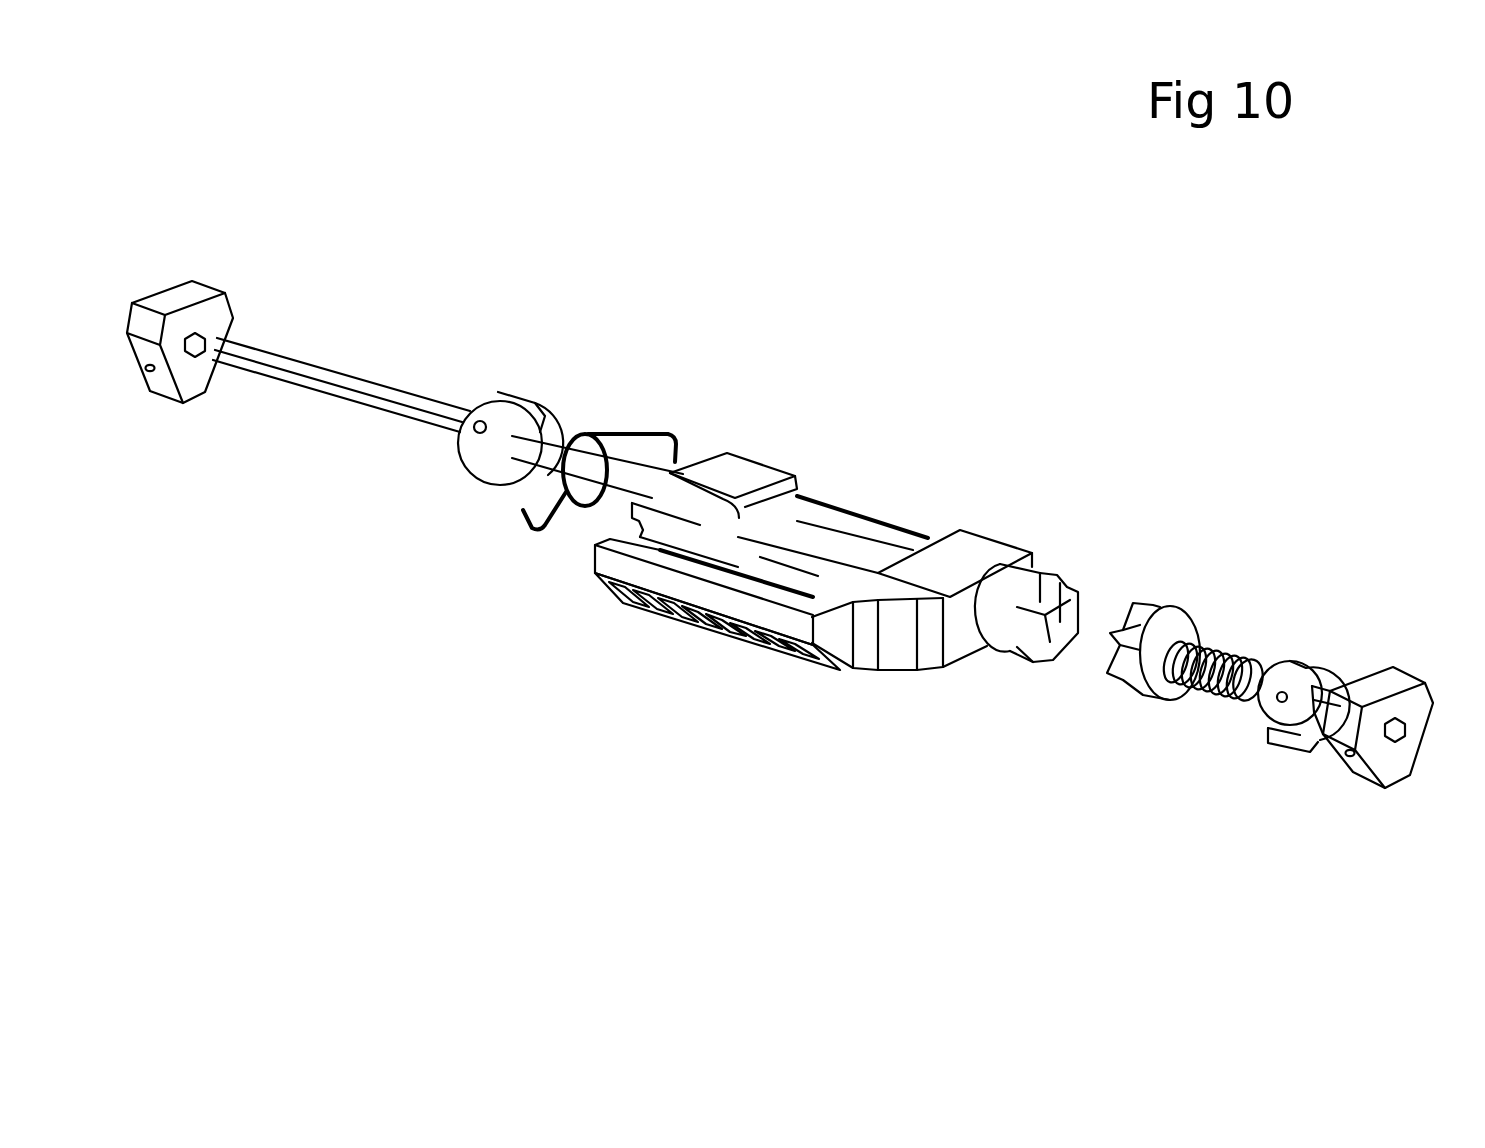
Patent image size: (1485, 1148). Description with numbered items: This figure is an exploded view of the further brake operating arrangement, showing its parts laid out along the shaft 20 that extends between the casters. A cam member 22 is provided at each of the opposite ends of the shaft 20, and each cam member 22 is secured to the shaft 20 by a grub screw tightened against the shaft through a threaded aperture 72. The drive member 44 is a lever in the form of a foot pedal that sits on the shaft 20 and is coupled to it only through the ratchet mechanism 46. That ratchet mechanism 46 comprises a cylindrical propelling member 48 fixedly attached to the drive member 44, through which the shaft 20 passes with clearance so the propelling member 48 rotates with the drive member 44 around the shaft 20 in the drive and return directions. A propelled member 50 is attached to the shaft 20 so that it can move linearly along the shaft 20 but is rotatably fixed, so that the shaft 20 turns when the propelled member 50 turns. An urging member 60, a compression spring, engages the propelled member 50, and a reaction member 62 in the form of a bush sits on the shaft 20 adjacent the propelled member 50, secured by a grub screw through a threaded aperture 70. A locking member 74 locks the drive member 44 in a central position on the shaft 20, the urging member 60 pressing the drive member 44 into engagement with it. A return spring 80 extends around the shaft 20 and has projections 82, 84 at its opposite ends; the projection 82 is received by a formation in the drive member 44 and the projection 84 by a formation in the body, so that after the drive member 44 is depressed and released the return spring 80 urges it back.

The shaft 20 is at (342, 380).
The cam member 22 is at (197, 382).
The drive member 44 is at (835, 642).
The ratchet mechanism 46 is at (925, 462).
The propelling member 48 is at (993, 622).
The propelled member 50 is at (1167, 607).
The urging member 60 is at (1193, 690).
The reaction member 62 is at (1297, 660).
The threaded aperture 70 is at (1280, 699).
The threaded aperture 72 is at (150, 371).
The locking member 74 is at (470, 455).
The return spring 80 is at (625, 430).
The projection 82 is at (528, 523).
The projection 84 is at (678, 444).